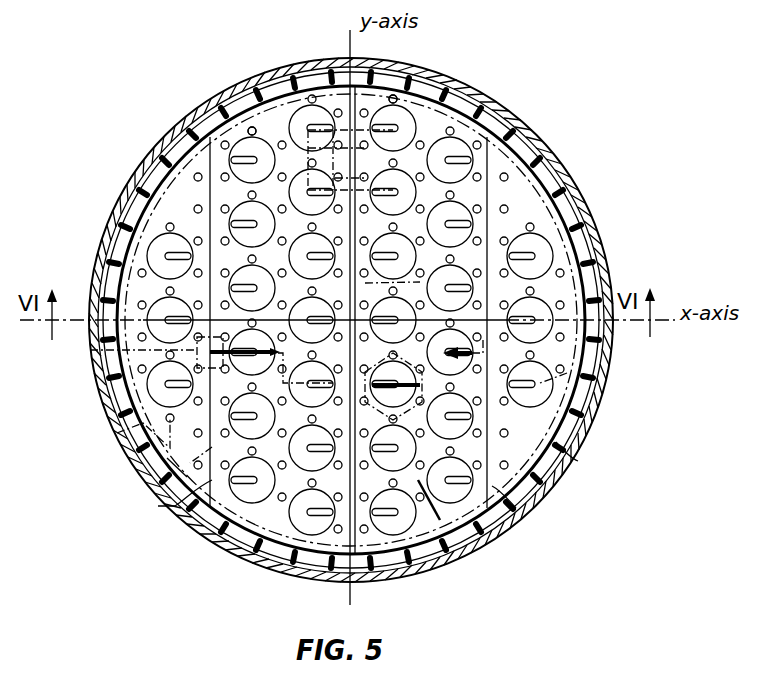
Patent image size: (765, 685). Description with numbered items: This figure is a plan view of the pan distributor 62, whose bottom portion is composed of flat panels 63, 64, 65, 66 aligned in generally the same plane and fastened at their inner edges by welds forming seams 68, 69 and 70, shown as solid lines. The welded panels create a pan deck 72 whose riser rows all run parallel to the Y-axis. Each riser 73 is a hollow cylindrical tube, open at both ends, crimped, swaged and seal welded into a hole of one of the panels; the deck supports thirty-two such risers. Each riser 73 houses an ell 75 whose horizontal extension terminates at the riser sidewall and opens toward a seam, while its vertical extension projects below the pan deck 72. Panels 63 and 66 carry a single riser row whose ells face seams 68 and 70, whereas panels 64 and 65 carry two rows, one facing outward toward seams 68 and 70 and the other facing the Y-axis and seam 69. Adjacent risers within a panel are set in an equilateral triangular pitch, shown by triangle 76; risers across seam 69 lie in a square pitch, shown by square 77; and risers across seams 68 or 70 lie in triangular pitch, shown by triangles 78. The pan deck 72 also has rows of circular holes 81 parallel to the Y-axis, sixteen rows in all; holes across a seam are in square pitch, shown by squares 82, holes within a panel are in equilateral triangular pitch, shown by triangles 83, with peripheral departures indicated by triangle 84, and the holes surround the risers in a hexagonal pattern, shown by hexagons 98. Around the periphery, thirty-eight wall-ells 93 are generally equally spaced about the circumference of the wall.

The pan distributor 62 is at (582, 156).
The flat panel 63 is at (194, 218).
The flat panel 64 is at (238, 211).
The flat panel 65 is at (489, 205).
The flat panel 66 is at (532, 224).
The seam 68 is at (169, 499).
The seam 69 is at (358, 538).
The seam 70 is at (516, 508).
The pan deck 72 is at (185, 177).
The riser 73 is at (458, 142).
The ell 75 is at (252, 127).
The equilateral triangle 76 is at (197, 450).
The square 77 is at (396, 95).
The triangle 78 is at (172, 250).
The circular hole 81 is at (138, 273).
The square 82 is at (343, 95).
The equilateral triangle 83 is at (240, 537).
The triangle 84 is at (117, 433).
The wall-ell 93 is at (550, 475).
The hexagon 98 is at (440, 520).